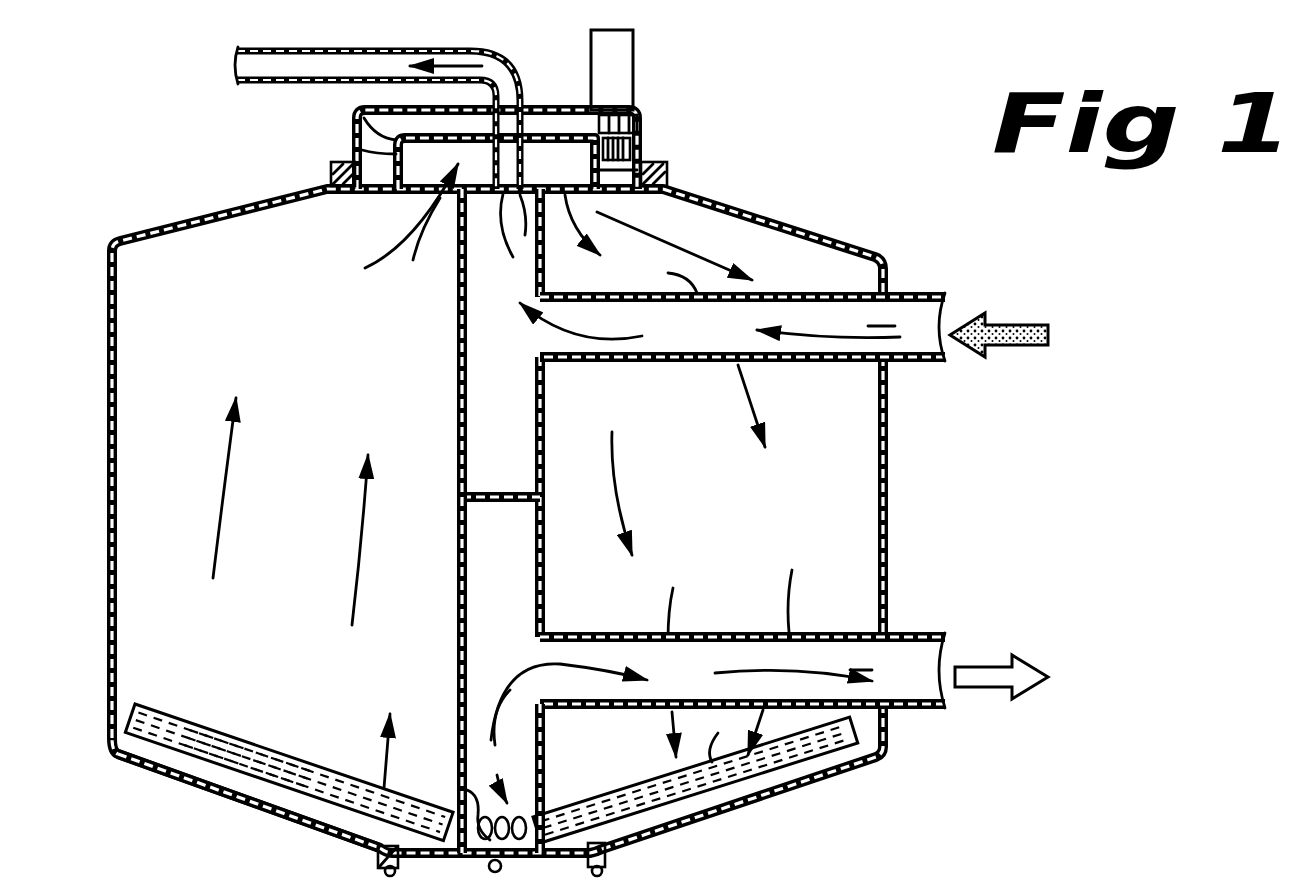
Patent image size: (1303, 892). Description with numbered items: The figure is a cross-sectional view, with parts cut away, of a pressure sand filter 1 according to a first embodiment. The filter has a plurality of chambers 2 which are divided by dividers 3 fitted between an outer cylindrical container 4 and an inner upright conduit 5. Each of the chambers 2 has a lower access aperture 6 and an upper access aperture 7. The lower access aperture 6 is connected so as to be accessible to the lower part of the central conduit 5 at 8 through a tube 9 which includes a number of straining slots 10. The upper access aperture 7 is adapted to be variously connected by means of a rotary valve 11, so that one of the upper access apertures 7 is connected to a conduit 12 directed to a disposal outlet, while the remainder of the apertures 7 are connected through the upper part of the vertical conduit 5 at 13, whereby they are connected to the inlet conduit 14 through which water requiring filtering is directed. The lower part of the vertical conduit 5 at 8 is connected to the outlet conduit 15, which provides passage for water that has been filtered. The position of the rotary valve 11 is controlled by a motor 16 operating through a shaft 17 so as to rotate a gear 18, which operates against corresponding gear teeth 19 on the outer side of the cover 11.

The housing 1 is at (888, 540).
The chambers 2 is at (122, 608).
The dividers 3 is at (322, 423).
The outer cylindrical container 4 is at (108, 688).
The inner upright conduit 5 is at (540, 462).
The lower access aperture 6 is at (360, 788).
The upper access aperture 7 is at (430, 198).
The lower part of the central conduit 8 is at (527, 574).
The tube 9 is at (217, 750).
The straining slots 10 is at (243, 750).
The rotary valve 11 is at (354, 143).
The conduit 12 is at (287, 58).
The upper part of the vertical conduit 13 is at (522, 413).
The inlet conduit 14 is at (900, 310).
The outlet conduit 15 is at (900, 653).
The motor 16 is at (632, 70).
The shaft 17 is at (640, 120).
The gear 18 is at (641, 150).
The gear teeth 19 is at (362, 110).